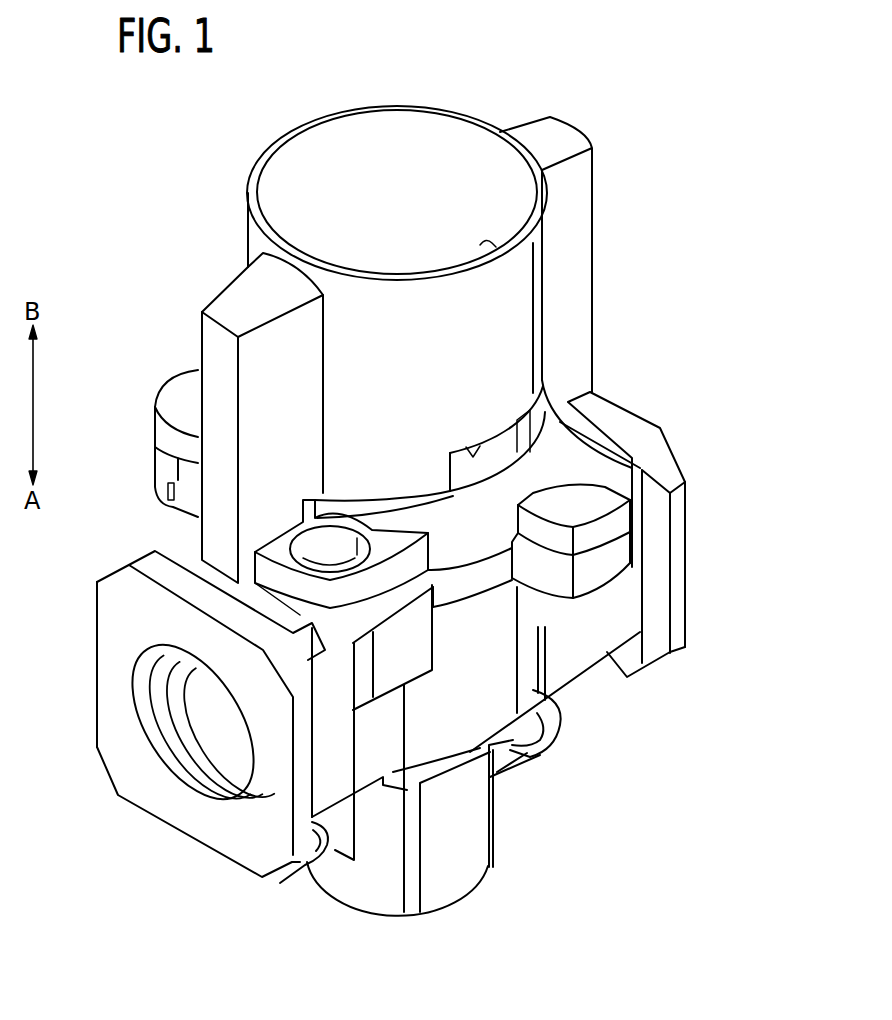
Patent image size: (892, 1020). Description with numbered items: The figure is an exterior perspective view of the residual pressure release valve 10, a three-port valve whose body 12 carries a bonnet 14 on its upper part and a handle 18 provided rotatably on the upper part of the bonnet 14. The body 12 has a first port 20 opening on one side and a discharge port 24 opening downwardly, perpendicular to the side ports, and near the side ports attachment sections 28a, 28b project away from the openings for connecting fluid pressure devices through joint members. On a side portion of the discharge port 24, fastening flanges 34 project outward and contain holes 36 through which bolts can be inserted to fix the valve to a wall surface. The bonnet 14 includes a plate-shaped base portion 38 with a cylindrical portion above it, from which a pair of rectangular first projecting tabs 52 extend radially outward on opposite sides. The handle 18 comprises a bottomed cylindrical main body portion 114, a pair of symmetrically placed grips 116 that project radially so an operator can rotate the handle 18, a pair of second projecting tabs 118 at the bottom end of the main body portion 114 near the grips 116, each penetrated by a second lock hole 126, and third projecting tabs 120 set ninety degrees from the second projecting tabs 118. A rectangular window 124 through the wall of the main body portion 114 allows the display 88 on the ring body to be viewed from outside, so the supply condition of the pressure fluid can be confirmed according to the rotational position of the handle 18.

The residual pressure release valve 10 is at (211, 125).
The body 12 is at (592, 692).
The bonnet 14 is at (625, 580).
The handle 18 is at (238, 219).
The first port 20 is at (190, 750).
The discharge port 24 is at (380, 915).
The attachment section 28a is at (100, 675).
The attachment section 28b is at (678, 540).
The fastening flange 34 is at (520, 752).
The hole 36 is at (318, 835).
The base portion 38 is at (163, 521).
The first projecting tab 52 is at (168, 465).
The display 88 is at (496, 457).
The main body portion 114 is at (378, 130).
The grip 116 is at (215, 336).
The second projecting tab 118 is at (275, 583).
The third projecting tab 120 is at (175, 385).
The window 124 is at (473, 450).
The second lock hole 126 is at (332, 565).